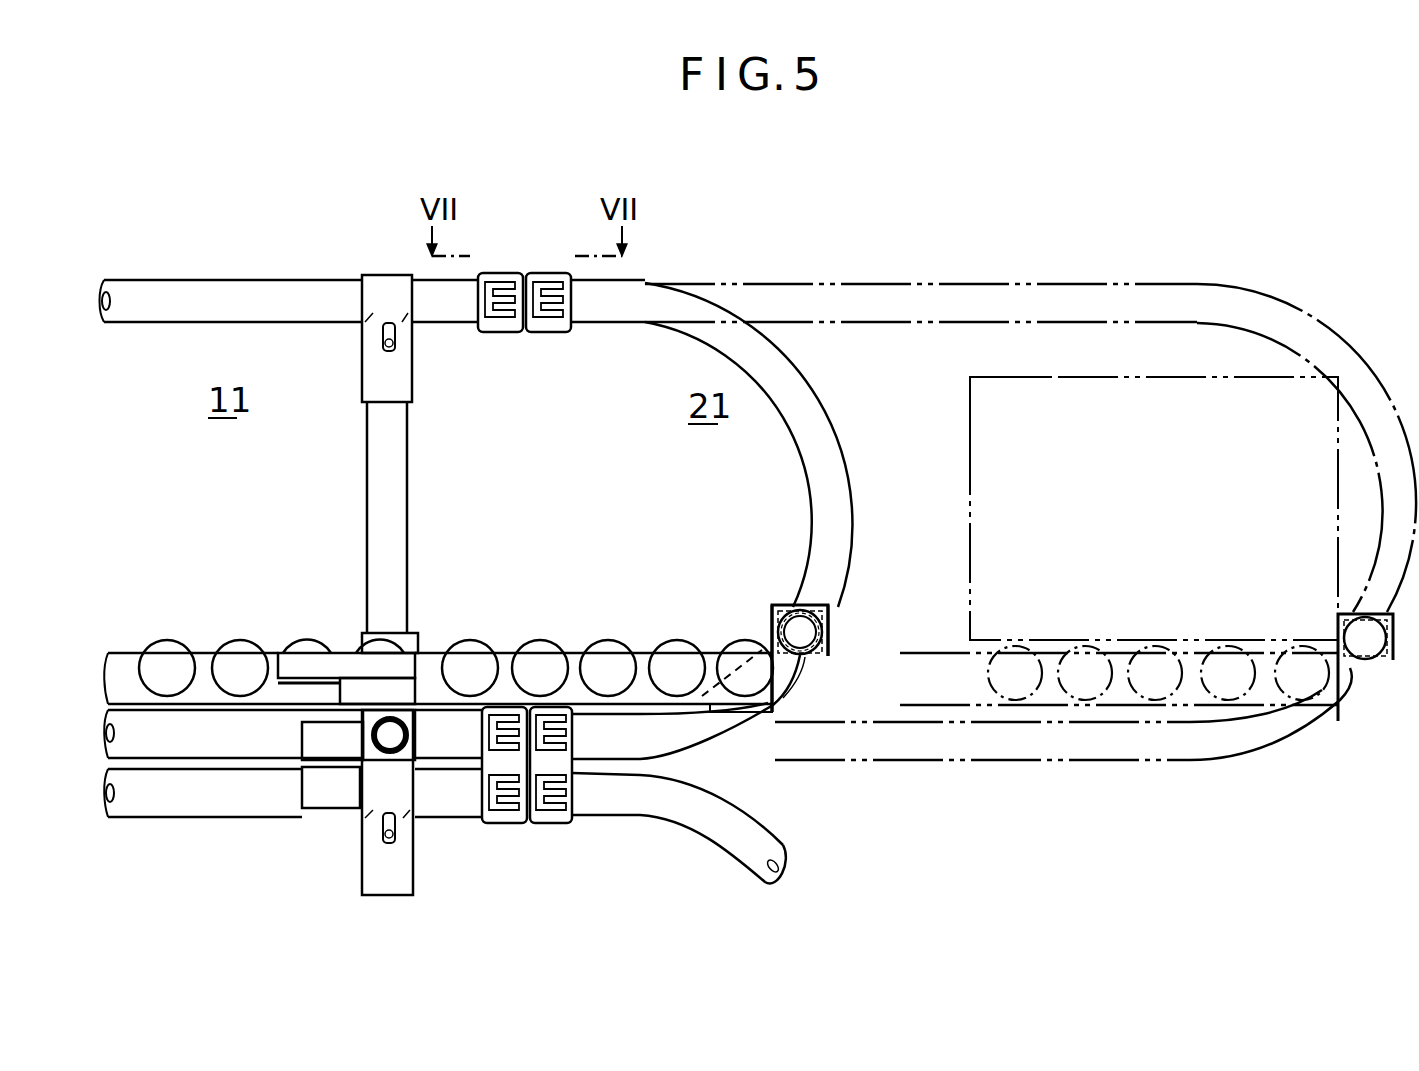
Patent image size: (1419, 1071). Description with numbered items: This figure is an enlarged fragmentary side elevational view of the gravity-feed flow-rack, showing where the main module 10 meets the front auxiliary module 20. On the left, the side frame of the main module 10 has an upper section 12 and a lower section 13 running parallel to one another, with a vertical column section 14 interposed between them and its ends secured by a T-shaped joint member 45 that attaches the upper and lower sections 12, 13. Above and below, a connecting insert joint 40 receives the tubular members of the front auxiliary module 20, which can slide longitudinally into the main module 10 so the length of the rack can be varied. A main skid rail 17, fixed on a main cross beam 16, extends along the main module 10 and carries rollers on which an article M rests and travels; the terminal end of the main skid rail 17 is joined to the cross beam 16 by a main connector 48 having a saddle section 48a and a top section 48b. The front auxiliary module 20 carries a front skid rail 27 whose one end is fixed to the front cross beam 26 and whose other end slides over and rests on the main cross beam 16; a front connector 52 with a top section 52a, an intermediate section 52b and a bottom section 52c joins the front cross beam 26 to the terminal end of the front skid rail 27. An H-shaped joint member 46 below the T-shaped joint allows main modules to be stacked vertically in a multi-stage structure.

The main module 10 is at (272, 272).
The upper section 12 is at (190, 292).
The lower section 13 is at (136, 750).
The vertical column section 14 is at (408, 468).
The main cross beam 16 is at (322, 785).
The main skid rail 17 is at (208, 650).
The front auxiliary module 20 is at (650, 280).
The front cross beam 26 is at (822, 662).
The front skid rail 27 is at (636, 658).
The connecting insert joint 40 is at (538, 340).
The T-shaped joint member 45 is at (362, 358).
The H-shaped joint member 46 is at (362, 770).
The main connector 48 is at (350, 733).
The saddle section of main connector 48a is at (415, 730).
The top section of main connector 48b is at (422, 655).
The front connector 52 is at (774, 606).
The top section of front connector 52a is at (832, 603).
The intermediate section of front connector 52b is at (800, 672).
The bottom section of front connector 52c is at (775, 715).
The article M is at (970, 443).